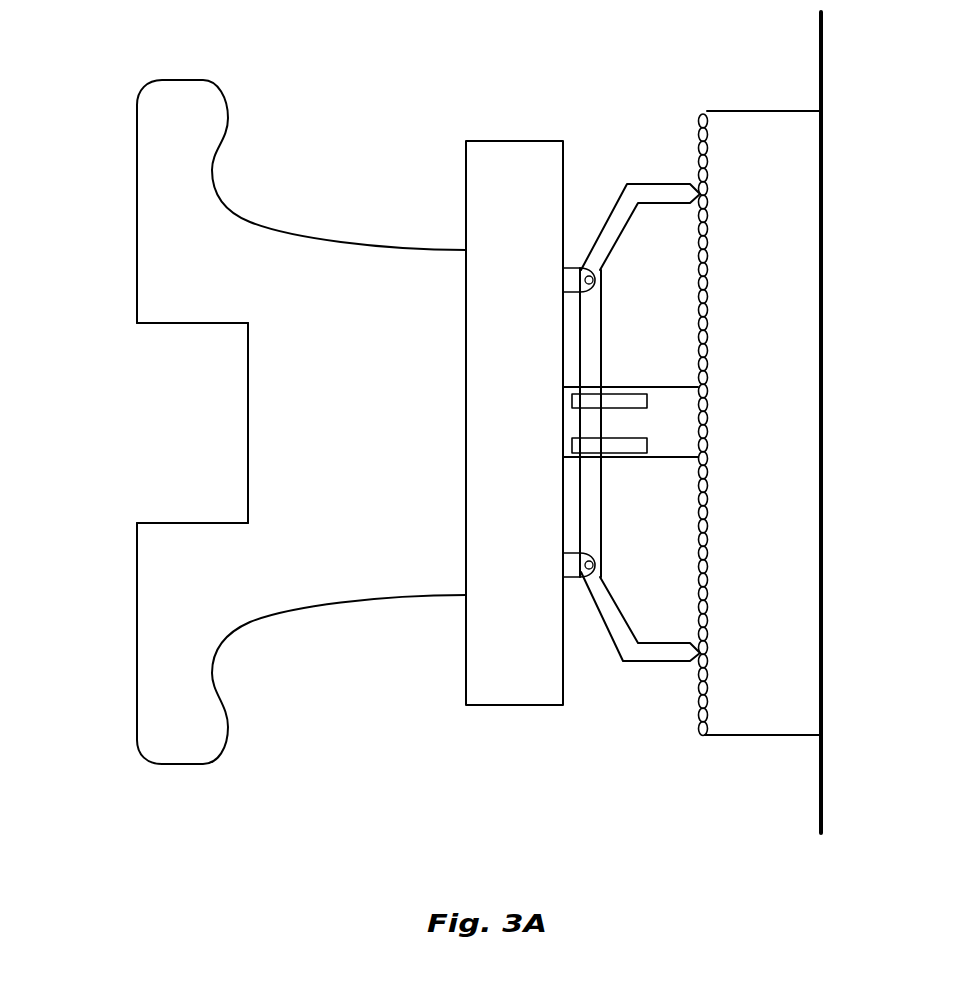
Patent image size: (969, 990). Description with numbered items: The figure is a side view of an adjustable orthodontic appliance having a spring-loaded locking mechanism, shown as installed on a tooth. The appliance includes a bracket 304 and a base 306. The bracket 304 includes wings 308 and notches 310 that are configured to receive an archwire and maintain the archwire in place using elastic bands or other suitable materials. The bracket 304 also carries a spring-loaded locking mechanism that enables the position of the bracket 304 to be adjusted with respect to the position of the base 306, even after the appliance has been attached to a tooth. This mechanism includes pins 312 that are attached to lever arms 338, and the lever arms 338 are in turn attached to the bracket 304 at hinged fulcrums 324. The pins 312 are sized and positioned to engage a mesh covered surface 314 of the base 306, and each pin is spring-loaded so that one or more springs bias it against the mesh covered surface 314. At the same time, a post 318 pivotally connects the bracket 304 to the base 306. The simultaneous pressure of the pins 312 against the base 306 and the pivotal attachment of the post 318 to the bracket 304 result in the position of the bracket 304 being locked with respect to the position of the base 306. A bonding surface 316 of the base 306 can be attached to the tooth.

The bracket 304 is at (380, 341).
The base 306 is at (788, 337).
The wings 308 is at (185, 107).
The notches 310 is at (195, 432).
The pins 312 is at (658, 190).
The mesh covered surface 314 is at (702, 138).
The bonding surface 316 is at (823, 388).
The post 318 is at (663, 408).
The hinged fulcrums 324 is at (580, 280).
The lever arms 338 is at (593, 312).